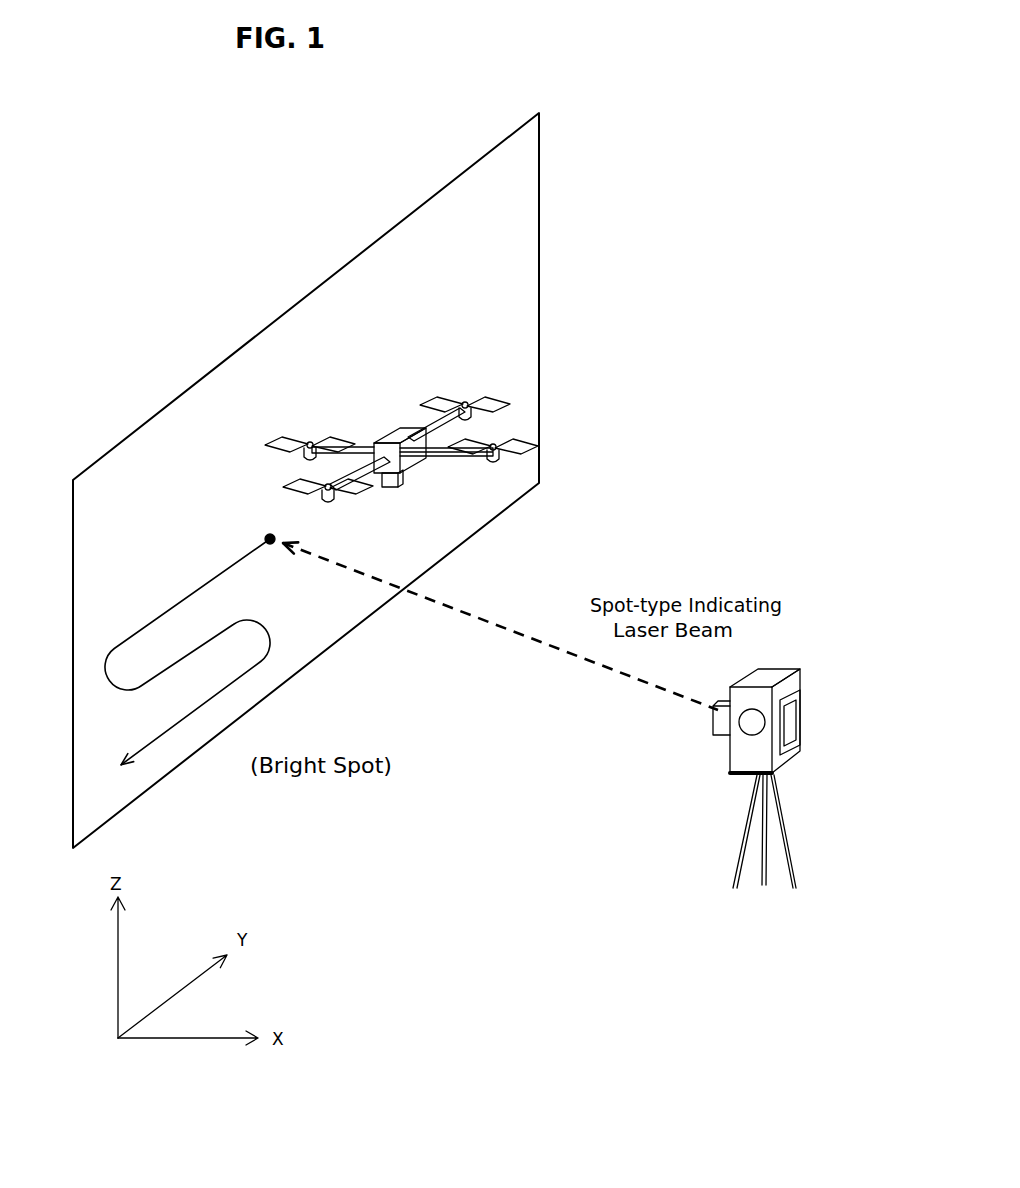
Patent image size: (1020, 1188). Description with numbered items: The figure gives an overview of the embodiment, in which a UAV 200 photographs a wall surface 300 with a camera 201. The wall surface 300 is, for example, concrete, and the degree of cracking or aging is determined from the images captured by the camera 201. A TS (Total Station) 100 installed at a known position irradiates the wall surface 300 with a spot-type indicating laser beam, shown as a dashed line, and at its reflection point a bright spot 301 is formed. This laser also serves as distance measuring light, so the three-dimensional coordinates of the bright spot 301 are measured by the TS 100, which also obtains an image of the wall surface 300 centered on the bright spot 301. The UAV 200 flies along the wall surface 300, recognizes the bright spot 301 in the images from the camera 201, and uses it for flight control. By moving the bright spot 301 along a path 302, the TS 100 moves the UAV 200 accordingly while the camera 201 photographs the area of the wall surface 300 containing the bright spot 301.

The TS (Total Station) 100 is at (738, 752).
The UAV 200 is at (400, 415).
The camera 201 is at (405, 482).
The wall surface 300 is at (525, 215).
The bright spot 301 is at (274, 556).
The moving path of the bright spot 302 is at (185, 724).